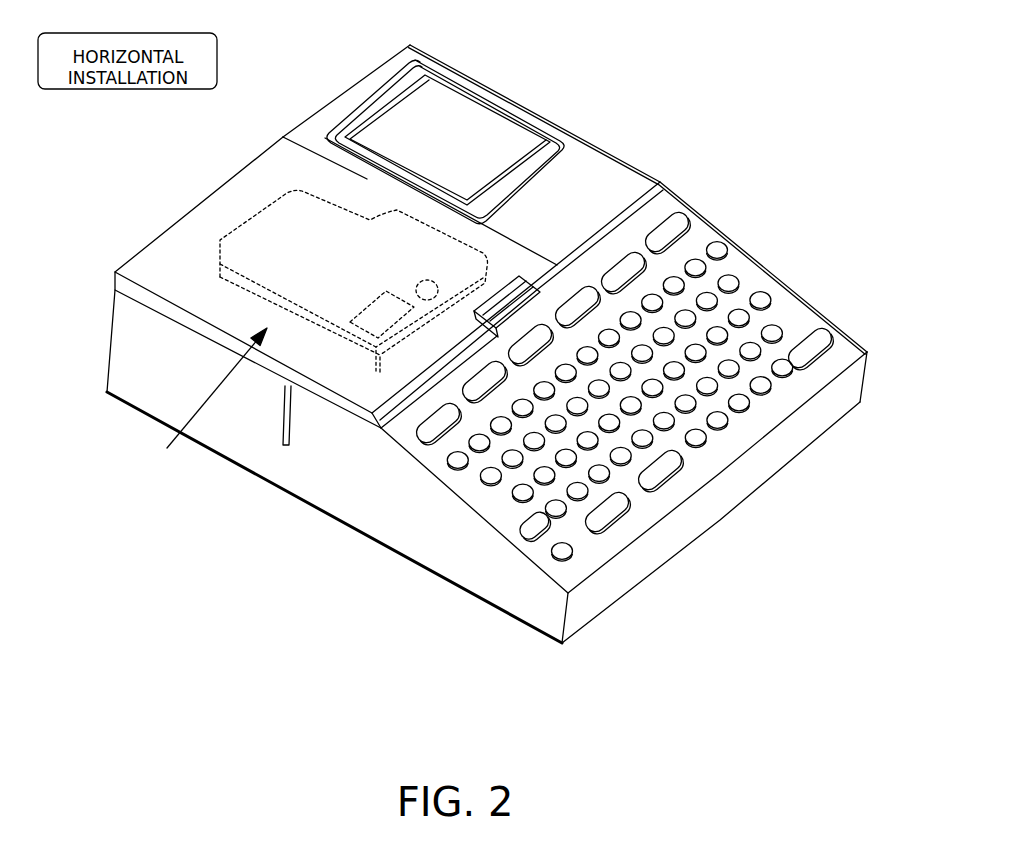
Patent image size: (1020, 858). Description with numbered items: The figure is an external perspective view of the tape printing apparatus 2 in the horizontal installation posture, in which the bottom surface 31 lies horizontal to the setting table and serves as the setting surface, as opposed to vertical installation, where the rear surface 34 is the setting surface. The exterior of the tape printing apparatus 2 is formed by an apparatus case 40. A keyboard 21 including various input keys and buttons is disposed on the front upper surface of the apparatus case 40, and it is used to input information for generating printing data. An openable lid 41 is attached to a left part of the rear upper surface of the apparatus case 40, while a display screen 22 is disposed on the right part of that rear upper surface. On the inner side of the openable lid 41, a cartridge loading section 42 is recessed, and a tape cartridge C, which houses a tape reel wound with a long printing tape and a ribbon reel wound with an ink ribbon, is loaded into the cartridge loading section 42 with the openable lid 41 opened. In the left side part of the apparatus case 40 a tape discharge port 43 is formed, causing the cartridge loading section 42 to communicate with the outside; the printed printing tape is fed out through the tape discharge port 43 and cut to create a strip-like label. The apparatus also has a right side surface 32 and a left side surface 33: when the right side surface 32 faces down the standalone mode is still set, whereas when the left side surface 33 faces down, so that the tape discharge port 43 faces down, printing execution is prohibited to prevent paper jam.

The tape printing apparatus 2 is at (636, 101).
The keyboard 21 is at (750, 283).
The display screen 22 is at (440, 97).
The bottom surface 31 is at (518, 625).
The right side surface 32 is at (502, 91).
The left side surface 33 is at (153, 382).
The rear surface 34 is at (316, 116).
The apparatus case 40 is at (410, 563).
The openable lid 41 is at (200, 217).
The cartridge loading section 42 is at (203, 399).
The tape discharge port 43 is at (282, 428).
The tape cartridge C is at (263, 207).